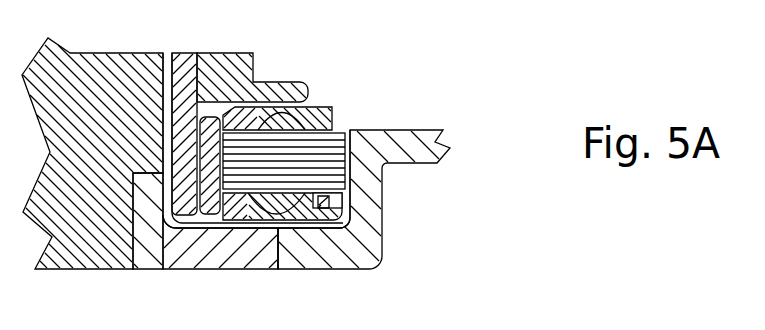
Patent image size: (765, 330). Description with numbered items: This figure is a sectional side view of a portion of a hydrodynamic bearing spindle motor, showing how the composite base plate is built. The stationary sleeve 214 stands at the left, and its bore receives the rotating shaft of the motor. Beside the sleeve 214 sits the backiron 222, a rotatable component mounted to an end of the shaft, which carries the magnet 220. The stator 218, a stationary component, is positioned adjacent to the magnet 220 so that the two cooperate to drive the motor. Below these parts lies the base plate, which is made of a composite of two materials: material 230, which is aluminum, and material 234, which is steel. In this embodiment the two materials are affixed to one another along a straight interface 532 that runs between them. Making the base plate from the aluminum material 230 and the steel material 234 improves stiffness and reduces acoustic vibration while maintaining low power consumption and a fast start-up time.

The sleeve 214 is at (127, 143).
The backiron 222 is at (188, 53).
The magnet 220 is at (221, 119).
The stator 218 is at (316, 157).
The material of the base plate 230 is at (185, 257).
The straight interface 532 is at (277, 253).
The material of the base plate 234 is at (366, 227).